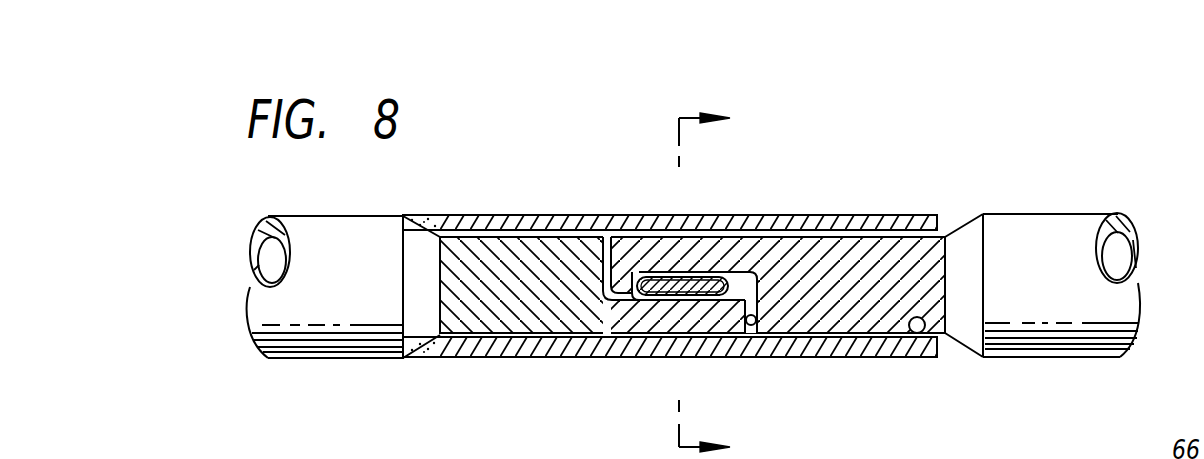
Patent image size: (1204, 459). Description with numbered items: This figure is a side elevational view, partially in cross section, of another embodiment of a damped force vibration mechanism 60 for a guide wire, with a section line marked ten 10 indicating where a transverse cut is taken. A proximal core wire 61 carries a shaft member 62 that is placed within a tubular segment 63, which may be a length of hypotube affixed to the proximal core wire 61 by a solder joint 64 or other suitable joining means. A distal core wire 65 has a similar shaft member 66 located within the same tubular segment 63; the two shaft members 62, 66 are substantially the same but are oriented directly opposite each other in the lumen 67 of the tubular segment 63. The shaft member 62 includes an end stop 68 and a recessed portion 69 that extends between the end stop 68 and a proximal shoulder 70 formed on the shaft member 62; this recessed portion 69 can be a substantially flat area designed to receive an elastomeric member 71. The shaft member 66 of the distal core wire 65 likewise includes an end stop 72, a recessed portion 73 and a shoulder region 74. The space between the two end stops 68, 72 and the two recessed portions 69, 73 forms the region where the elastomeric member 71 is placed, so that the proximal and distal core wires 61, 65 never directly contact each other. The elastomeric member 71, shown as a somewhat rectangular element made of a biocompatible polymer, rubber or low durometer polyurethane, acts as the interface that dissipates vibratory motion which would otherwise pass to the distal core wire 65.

The section line 10- 10 is at (728, 278).
The damped force vibration mechanism 60 is at (1010, 156).
The proximal core wire 61 is at (342, 232).
The shaft member 62 is at (485, 262).
The tubular segment 63 is at (497, 348).
The solder joint 64 is at (435, 350).
The distal core wire 65 is at (1075, 253).
The shaft member 66 is at (867, 270).
The lumen 67 is at (916, 333).
The end stop 68 is at (745, 280).
The recessed portion 69 is at (708, 305).
The proximal shoulder 70 is at (619, 242).
The elastomeric member 71 is at (655, 297).
The end stop 72 is at (616, 297).
The recessed portion 73 is at (706, 277).
The shoulder region 74 is at (752, 325).